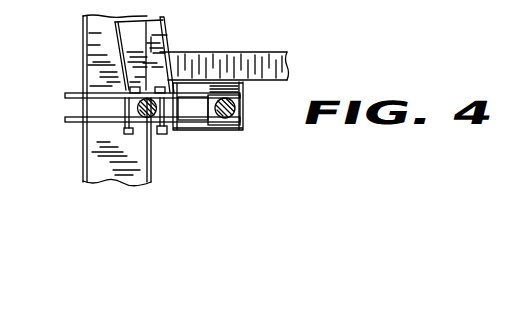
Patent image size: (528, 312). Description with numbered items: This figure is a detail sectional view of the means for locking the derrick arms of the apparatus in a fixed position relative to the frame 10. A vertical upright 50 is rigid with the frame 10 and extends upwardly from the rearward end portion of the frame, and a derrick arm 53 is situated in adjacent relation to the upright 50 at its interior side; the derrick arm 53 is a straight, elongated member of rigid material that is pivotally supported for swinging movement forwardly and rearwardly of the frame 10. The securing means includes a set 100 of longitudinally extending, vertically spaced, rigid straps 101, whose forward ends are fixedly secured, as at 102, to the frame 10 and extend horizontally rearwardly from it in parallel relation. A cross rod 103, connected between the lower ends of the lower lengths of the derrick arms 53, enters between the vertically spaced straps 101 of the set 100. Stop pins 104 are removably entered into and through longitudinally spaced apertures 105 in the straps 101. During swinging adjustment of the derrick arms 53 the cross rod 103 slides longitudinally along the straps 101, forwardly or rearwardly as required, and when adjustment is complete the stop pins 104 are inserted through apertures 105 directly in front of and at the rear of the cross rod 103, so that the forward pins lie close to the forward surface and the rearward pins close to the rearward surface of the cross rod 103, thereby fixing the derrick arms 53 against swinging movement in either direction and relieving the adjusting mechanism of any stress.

The frame 10 is at (252, 100).
The vertical upright 50 is at (100, 33).
The derrick arm 53 is at (166, 28).
The set of straps 100 is at (75, 92).
The rigid strap 101 is at (65, 120).
The securing point of straps to frame 102 is at (210, 121).
The cross rod 103 is at (150, 140).
The stop pin 104 is at (127, 127).
The aperture 105 is at (190, 93).